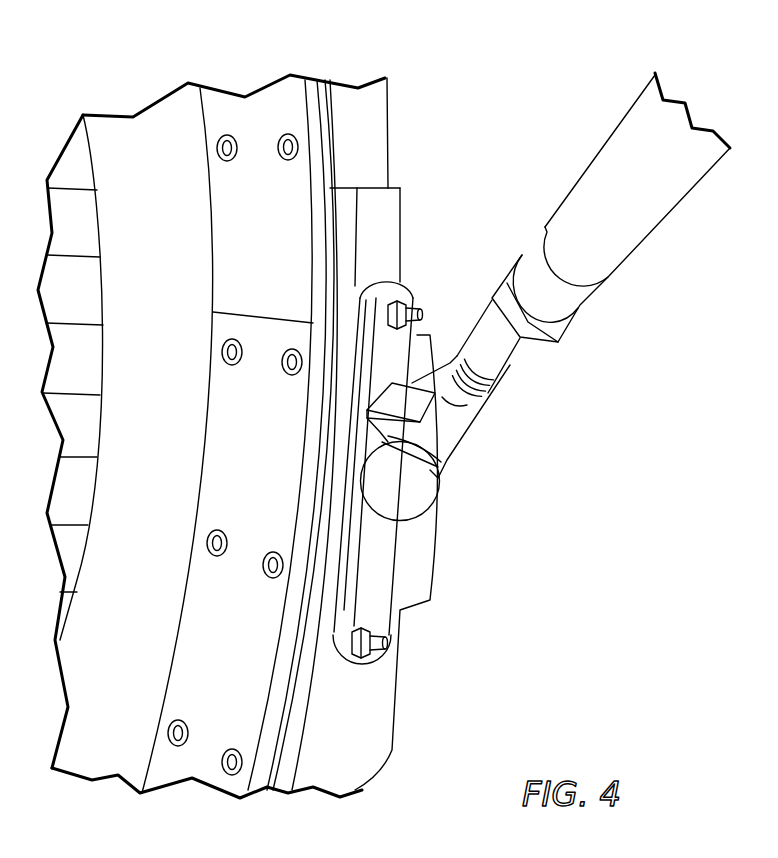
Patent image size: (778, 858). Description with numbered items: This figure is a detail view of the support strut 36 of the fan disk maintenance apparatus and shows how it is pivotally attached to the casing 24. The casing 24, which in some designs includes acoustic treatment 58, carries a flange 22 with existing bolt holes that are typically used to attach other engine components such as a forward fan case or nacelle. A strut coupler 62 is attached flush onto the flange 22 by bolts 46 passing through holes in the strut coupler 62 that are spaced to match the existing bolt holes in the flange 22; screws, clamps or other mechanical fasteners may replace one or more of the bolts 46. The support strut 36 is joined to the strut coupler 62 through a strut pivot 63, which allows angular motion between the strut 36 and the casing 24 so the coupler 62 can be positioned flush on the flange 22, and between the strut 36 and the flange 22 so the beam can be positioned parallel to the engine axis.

The flange 22 is at (352, 103).
The casing 24 is at (92, 662).
The support strut 36 is at (633, 152).
The bolts 46 is at (413, 297).
The acoustic treatment 58 is at (227, 688).
The strut coupler 62 is at (380, 202).
The strut pivot 63 is at (415, 490).